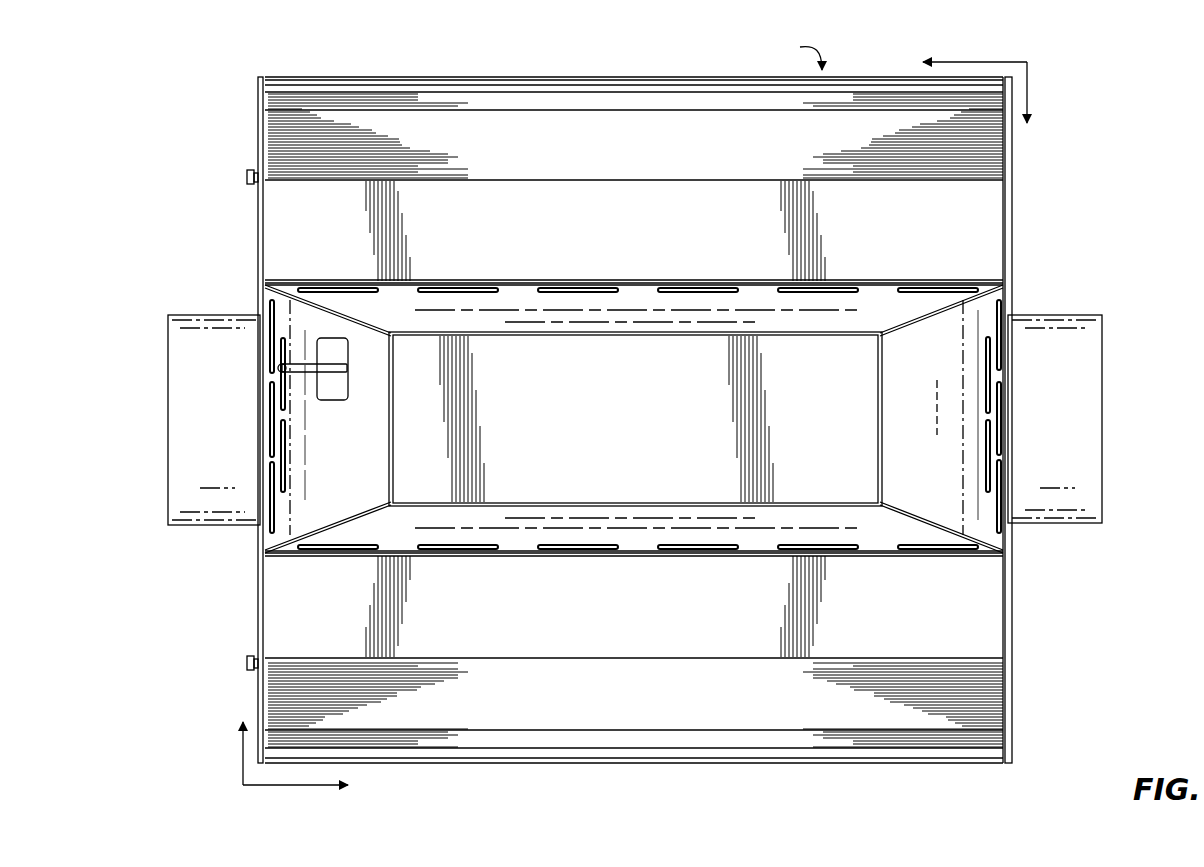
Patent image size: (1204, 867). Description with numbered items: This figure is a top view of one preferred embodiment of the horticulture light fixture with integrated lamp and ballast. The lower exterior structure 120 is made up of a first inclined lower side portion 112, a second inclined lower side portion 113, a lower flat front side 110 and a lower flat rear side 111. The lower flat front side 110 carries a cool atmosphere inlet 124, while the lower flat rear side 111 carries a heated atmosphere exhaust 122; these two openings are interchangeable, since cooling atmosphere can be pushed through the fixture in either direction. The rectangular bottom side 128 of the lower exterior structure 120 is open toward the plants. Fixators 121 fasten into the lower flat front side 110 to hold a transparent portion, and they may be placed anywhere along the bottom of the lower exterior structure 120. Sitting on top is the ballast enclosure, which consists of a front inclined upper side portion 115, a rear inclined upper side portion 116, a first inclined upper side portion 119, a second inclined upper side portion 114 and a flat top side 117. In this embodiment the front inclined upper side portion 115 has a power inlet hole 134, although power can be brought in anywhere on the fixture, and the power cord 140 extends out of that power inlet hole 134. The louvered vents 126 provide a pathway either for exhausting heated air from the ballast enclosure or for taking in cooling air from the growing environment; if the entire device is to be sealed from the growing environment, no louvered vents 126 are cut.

The lower flat front side 110 is at (258, 275).
The lower flat rear side 111 is at (1012, 203).
The first inclined lower side portion 112 is at (661, 616).
The second inclined lower side portion 113 is at (661, 250).
The second inclined upper side portion 114 is at (661, 322).
The front inclined upper side portion 115 is at (361, 494).
The rear inclined upper side portion 116 is at (928, 424).
The flat top side 117 is at (661, 446).
The first inclined upper side portion 119 is at (661, 542).
The lower exterior structure 120 is at (638, 424).
The fixators 121 is at (247, 177).
The heated atmosphere exhaust 122 is at (1086, 371).
The cool atmosphere inlet 124 is at (244, 361).
The louvered vents 126 is at (1010, 312).
The rectangular bottom side 128 is at (793, 56).
The power inlet hole 134 is at (337, 400).
The power cord 140 is at (302, 367).